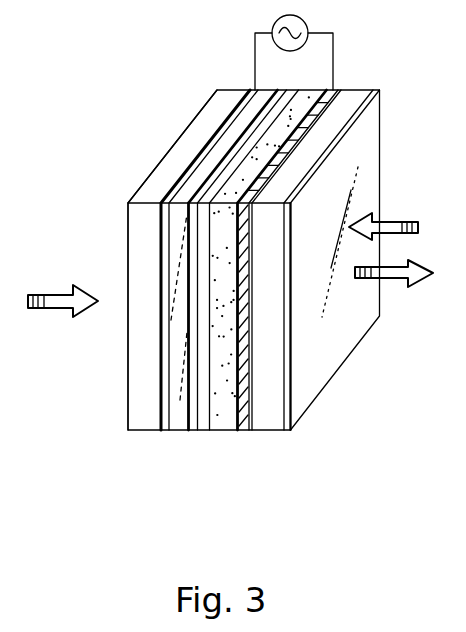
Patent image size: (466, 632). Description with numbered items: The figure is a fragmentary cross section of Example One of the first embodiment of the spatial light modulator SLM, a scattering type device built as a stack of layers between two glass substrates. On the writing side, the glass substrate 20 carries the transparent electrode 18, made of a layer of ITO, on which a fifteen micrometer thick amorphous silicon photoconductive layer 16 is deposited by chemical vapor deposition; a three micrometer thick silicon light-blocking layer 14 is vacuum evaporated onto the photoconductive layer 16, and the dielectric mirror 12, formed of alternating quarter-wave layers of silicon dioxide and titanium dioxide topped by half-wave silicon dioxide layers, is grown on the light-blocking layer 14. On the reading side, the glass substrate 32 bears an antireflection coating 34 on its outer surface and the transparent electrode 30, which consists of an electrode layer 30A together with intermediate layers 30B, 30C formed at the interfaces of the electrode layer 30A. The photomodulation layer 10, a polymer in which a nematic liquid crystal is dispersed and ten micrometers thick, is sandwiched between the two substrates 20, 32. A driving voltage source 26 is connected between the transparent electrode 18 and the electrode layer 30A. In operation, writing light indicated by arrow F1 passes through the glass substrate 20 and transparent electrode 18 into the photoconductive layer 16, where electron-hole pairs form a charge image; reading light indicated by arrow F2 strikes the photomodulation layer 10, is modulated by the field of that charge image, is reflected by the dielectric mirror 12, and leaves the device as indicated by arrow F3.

The photomodulation layer 10 is at (225, 433).
The dielectric mirror 12 is at (202, 433).
The light-blocking layer 14 is at (193, 433).
The photoconductive layer 16 is at (179, 433).
The transparent electrode 18 is at (163, 433).
The glass substrate 20 is at (140, 433).
The driving voltage source 26 is at (309, 26).
The transparent electrode 30 is at (258, 391).
The electrode layer 30A is at (250, 433).
The intermediate layer 30B is at (243, 433).
The intermediate layer 30C is at (262, 433).
The glass substrate 32 is at (267, 360).
The antireflection coating 34 is at (292, 337).
The spatial light modulator SLM is at (201, 87).
The arrow indicating writing light F1 is at (57, 295).
The arrow indicating reading light F2 is at (397, 222).
The arrow indicating modulated reading light F3 is at (397, 278).